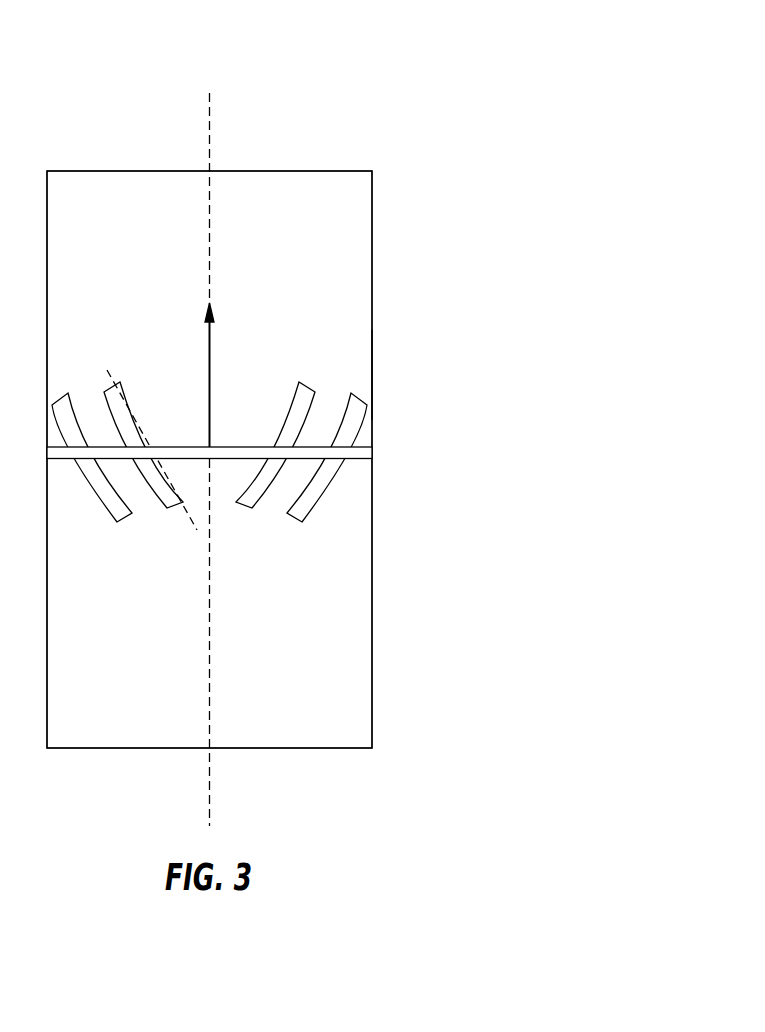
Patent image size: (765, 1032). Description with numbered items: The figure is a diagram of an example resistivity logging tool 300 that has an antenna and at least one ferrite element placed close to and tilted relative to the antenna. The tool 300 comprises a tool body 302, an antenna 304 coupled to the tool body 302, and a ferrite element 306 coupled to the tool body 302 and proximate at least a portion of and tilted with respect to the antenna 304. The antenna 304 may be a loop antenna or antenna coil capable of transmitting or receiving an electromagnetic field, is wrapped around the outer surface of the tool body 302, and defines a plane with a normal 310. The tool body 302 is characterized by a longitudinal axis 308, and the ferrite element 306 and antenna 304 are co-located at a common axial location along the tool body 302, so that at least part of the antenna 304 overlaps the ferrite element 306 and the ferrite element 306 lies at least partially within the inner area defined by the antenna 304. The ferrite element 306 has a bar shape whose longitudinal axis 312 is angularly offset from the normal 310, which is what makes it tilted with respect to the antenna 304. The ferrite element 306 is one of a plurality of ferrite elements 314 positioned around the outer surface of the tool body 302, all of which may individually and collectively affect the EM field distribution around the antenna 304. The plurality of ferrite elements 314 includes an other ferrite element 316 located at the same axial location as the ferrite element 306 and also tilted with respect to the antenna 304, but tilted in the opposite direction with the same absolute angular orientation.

The resistivity logging tool 300 is at (363, 58).
The tool body 302 is at (373, 280).
The antenna 304 is at (366, 455).
The ferrite element 306 is at (137, 421).
The longitudinal axis 308 is at (210, 108).
The normal 310 is at (212, 335).
The fin axis 312 is at (105, 366).
The plurality of ferrite elements 314 is at (382, 376).
The other ferrite element 316 is at (284, 422).